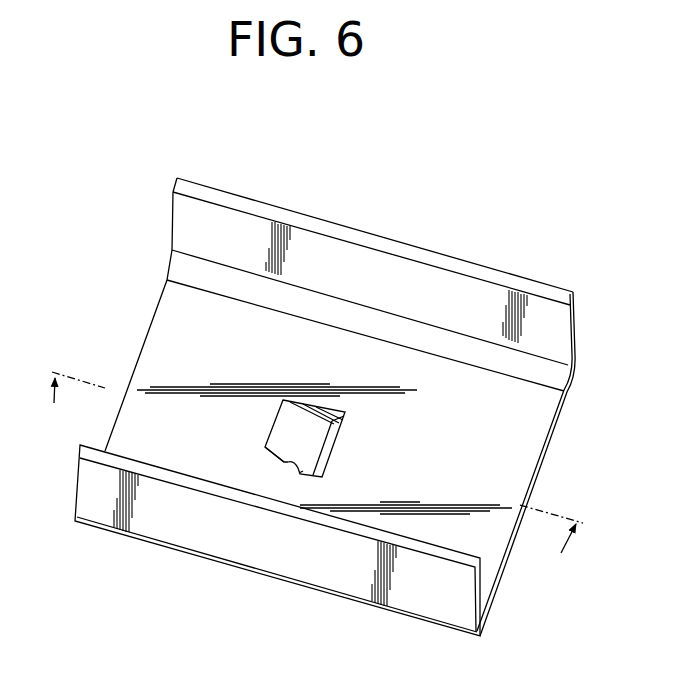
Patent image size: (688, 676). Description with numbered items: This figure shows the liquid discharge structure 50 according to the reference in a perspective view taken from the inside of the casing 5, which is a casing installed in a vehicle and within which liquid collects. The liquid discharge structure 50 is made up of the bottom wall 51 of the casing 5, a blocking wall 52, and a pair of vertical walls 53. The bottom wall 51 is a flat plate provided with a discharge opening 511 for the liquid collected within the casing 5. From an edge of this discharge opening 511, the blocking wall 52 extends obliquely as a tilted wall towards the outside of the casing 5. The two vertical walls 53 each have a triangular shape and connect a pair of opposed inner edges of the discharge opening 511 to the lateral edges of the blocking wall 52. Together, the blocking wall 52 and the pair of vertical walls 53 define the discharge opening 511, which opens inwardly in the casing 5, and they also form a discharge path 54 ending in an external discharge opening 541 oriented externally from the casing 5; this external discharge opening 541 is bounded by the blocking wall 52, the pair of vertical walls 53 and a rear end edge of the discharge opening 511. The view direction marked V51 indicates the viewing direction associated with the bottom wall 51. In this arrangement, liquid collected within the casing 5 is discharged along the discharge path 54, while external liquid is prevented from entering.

The casing 5 is at (411, 228).
The liquid discharge structure 50 is at (116, 332).
The bottom wall 51 is at (522, 442).
The discharge opening 511 is at (302, 473).
The blocking wall 52 is at (266, 449).
The vertical walls 53 is at (328, 402).
The discharge path 54 is at (284, 441).
The external discharge opening 541 is at (333, 448).
The viewing direction V51 is at (308, 473).